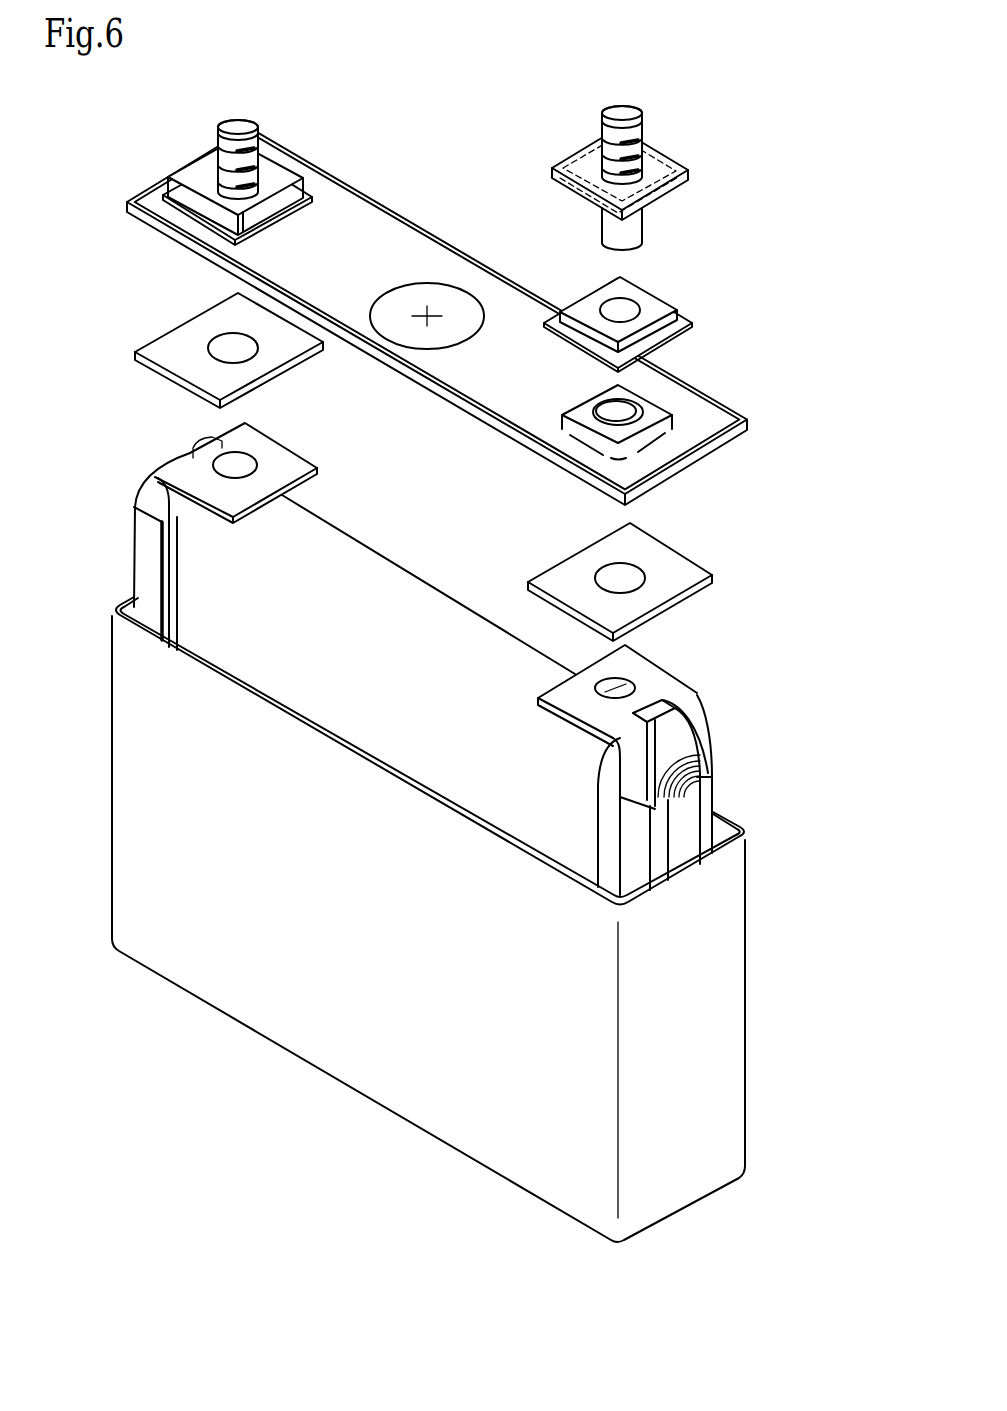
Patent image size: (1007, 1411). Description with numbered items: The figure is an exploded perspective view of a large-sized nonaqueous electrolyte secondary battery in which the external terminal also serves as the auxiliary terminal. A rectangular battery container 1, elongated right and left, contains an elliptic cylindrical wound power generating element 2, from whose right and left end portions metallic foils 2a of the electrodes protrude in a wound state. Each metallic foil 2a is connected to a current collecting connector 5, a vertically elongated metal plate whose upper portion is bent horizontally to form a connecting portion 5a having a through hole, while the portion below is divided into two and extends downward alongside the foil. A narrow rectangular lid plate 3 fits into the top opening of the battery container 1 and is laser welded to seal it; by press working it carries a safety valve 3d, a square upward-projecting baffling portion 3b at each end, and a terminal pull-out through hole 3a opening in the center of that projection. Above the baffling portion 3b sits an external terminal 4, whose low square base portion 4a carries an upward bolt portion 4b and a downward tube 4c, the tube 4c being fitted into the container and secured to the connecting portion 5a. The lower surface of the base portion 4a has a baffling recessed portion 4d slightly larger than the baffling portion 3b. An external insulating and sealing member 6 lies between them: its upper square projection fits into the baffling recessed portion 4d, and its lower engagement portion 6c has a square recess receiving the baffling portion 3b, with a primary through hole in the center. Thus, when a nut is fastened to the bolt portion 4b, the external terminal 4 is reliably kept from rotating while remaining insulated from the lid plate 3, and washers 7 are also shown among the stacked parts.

The battery container 1 is at (446, 1076).
The power generating element 2 is at (423, 695).
The metallic foil 2a is at (178, 517).
The lid plate 3 is at (437, 317).
The terminal pull-out through hole 3a is at (600, 407).
The baffling portion 3b is at (634, 399).
The safety valve 3d is at (435, 302).
The external terminal 4 is at (440, 154).
The base portion 4a is at (207, 185).
The bolt portion 4b is at (240, 123).
The tube 4c is at (613, 232).
The baffling recessed portion 4d is at (663, 193).
The current collecting connector 5 is at (418, 604).
The connecting portion 5a is at (278, 467).
The external insulating and sealing member 6 is at (263, 230).
The engagement portion 6c is at (640, 293).
The washer 7 is at (188, 342).